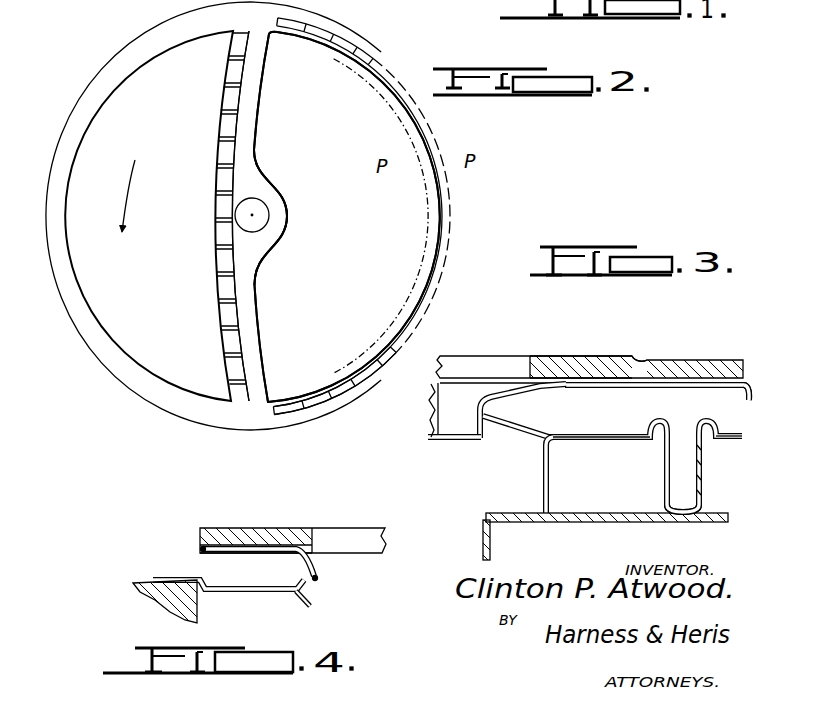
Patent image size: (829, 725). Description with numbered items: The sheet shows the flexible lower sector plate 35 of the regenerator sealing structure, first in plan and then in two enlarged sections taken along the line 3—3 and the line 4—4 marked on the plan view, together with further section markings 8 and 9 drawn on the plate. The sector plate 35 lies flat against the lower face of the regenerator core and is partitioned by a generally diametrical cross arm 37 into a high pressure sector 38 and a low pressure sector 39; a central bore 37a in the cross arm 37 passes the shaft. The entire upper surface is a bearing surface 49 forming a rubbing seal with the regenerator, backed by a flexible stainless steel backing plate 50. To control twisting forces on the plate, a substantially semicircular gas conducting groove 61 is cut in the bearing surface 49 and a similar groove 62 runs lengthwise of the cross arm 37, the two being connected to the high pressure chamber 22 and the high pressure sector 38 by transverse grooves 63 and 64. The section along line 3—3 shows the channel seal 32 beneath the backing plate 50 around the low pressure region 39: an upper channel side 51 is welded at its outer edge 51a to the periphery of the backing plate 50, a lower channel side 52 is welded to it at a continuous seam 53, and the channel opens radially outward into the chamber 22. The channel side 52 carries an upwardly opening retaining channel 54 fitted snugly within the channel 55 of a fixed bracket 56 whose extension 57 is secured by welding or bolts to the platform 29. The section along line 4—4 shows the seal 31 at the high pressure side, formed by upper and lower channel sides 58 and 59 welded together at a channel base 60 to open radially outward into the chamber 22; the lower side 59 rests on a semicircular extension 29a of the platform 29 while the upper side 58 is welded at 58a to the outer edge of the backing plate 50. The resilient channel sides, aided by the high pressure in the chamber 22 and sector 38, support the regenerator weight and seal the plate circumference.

In FIG. 3, the high pressure chamber 22 is at (735, 421).
In FIG. 3, the platform 29 is at (592, 523).
In FIG. 4, the semicircular extension of platform 29a is at (294, 594).
In FIG. 4, the channel seal 31 is at (318, 554).
In FIG. 3, the channel seal 32 is at (492, 392).
In FIG. 2, the lower sector plate 35 is at (452, 248).
In FIG. 3, the lower sector plate 35 is at (590, 354).
In FIG. 2, the cross arm 37 is at (250, 118).
In FIG. 2, the central bore 37a is at (263, 199).
In FIG. 2, the high pressure sector 38 is at (160, 266).
In FIG. 2, the low pressure sector 39 is at (380, 223).
In FIG. 3, the bearing surface 49 is at (551, 356).
In FIG. 4, the bearing surface 49 is at (219, 527).
In FIG. 3, the backing plate 50 is at (611, 357).
In FIG. 4, the backing plate 50 is at (263, 546).
In FIG. 3, the upper channel side 51 is at (700, 390).
In FIG. 3, the weld at outer edge of channel side 51a is at (750, 399).
In FIG. 3, the lower channel side 52 is at (590, 413).
In FIG. 3, the continuous seam 53 is at (479, 434).
In FIG. 3, the retaining channel 54 is at (689, 473).
In FIG. 3, the channel of fixed bracket 55 is at (670, 474).
In FIG. 3, the fixed bracket 56 is at (592, 441).
In FIG. 3, the bracket extension 57 is at (508, 512).
In FIG. 4, the upper channel side 58 is at (236, 558).
In FIG. 4, the weld of upper channel side 58a is at (201, 548).
In FIG. 4, the lower channel side 59 is at (258, 592).
In FIG. 4, the channel base 60 is at (318, 578).
In FIG. 2, the semicircular gas conducting groove 61 is at (343, 391).
In FIG. 3, the semicircular gas conducting groove 61 is at (642, 357).
In FIG. 2, the gas conducting groove 62 is at (255, 271).
In FIG. 2, the transverse gas conducting groove 63 is at (352, 395).
In FIG. 3, the transverse gas conducting groove 63 is at (684, 360).
In FIG. 2, the transverse gas conducting groove 64 is at (222, 221).
In FIG. 2, the section line 3— 3 is at (407, 367).
In FIG. 2, the section line 4— 4 is at (94, 239).
In FIG. 2, the section line 8 is at (216, 331).
In FIG. 2, the section line 9 is at (224, 73).